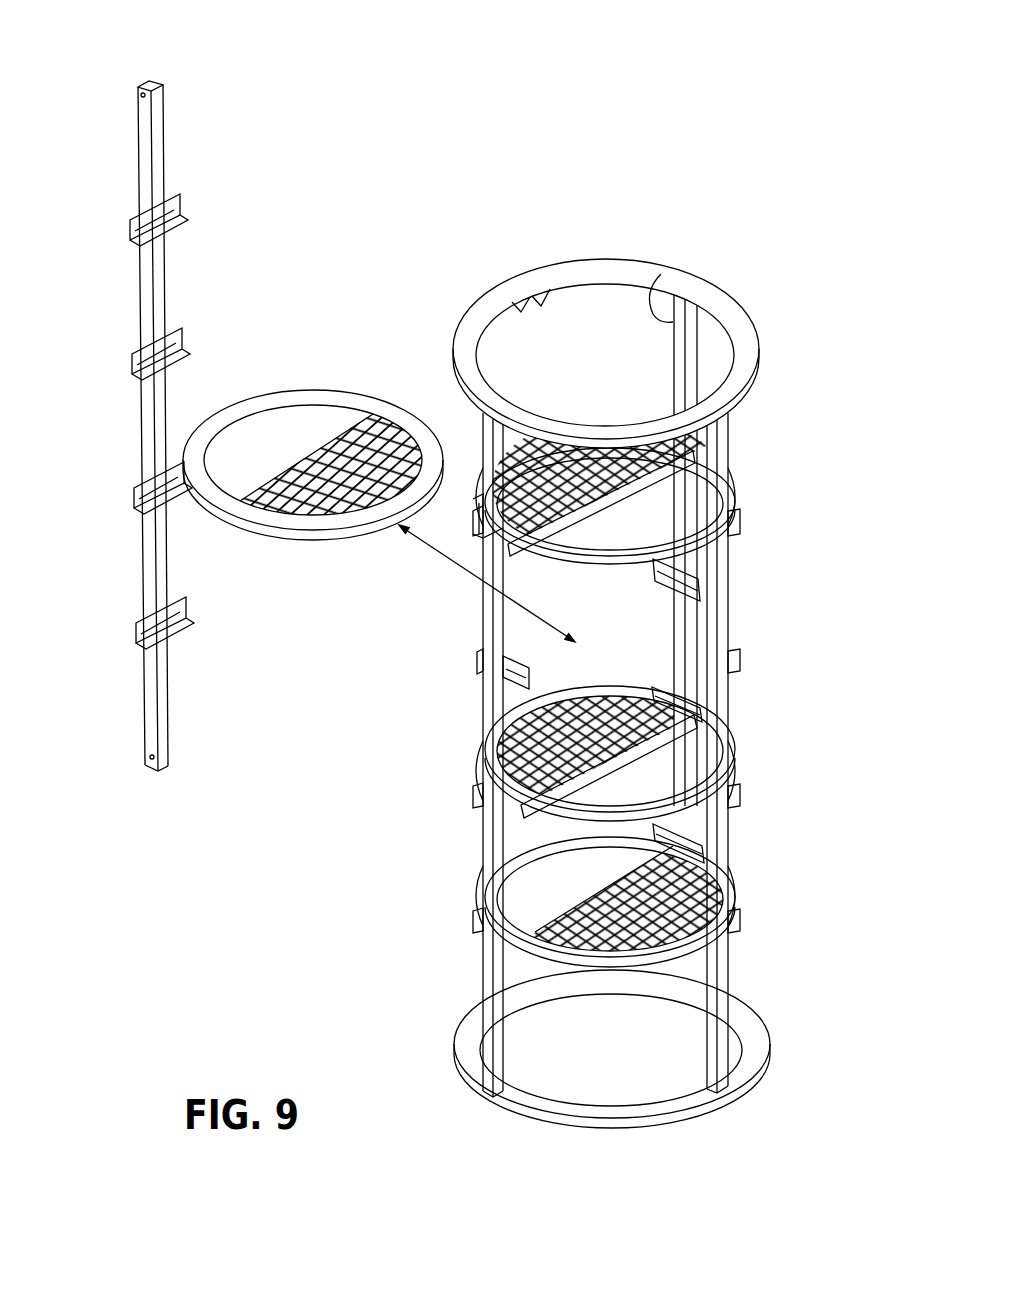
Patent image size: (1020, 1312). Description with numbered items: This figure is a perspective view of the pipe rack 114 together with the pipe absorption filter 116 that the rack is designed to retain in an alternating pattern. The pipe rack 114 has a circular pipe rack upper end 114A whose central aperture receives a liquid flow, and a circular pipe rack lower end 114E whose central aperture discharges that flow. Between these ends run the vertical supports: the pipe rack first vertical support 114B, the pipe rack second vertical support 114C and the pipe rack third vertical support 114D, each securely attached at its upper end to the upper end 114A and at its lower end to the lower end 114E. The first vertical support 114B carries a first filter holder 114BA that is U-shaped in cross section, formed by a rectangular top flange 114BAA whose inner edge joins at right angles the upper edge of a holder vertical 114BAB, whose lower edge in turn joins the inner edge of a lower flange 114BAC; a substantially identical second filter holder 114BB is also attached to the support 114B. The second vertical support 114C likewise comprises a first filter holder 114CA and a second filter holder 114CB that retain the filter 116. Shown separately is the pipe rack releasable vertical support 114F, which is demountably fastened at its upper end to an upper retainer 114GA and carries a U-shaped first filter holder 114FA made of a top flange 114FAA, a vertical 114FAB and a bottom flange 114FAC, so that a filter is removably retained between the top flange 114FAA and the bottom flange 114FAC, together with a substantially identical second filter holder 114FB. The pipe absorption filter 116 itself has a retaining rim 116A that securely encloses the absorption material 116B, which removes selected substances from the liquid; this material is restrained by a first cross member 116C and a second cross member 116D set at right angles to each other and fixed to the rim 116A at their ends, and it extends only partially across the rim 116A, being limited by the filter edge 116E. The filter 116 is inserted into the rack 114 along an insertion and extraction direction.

The pipe rack 114 is at (717, 284).
The pipe rack upper end 114A is at (751, 331).
The pipe rack first vertical support 114B is at (475, 691).
The pipe rack first vertical support first filter holder 114BA is at (681, 430).
The pipe rack first vertical support first filter holder top flange 114BAA is at (495, 518).
The pipe rack first vertical support first filter holder vertical 114BAB is at (484, 505).
The pipe rack first vertical support first filter holder lower flange 114BAC is at (470, 490).
The pipe rack first vertical support second filter holder 114BB is at (472, 649).
The pipe rack second vertical support 114C is at (722, 820).
The pipe rack second vertical support first filter holder 114CA is at (732, 511).
The pipe rack second vertical support second filter holder 114CB is at (732, 648).
The pipe rack third vertical support 114D is at (653, 267).
The pipe rack lower end 114E is at (739, 1048).
The pipe rack releasable vertical support 114F is at (131, 308).
The pipe rack releasable vertical support first filter holder 114FA is at (230, 180).
The pipe rack releasable vertical support first filter holder top flange 114FAA is at (167, 188).
The pipe rack releasable vertical support first filter holder vertical 114FAB is at (169, 191).
The pipe rack releasable vertical support first filter holder bottom flange 114FAC is at (182, 205).
The pipe rack releasable vertical support second filter holder 114FB is at (173, 322).
The upper retainer 114GA is at (534, 286).
The pipe absorption filter 116 is at (436, 616).
The pipe absorption filter retaining rim 116A is at (275, 384).
The pipe absorption filter absorption material 116B is at (313, 457).
The pipe absorption filter first cross member 116C is at (352, 429).
The pipe absorption filter second cross member 116D is at (263, 489).
The pipe absorption filter edge 116E is at (624, 476).